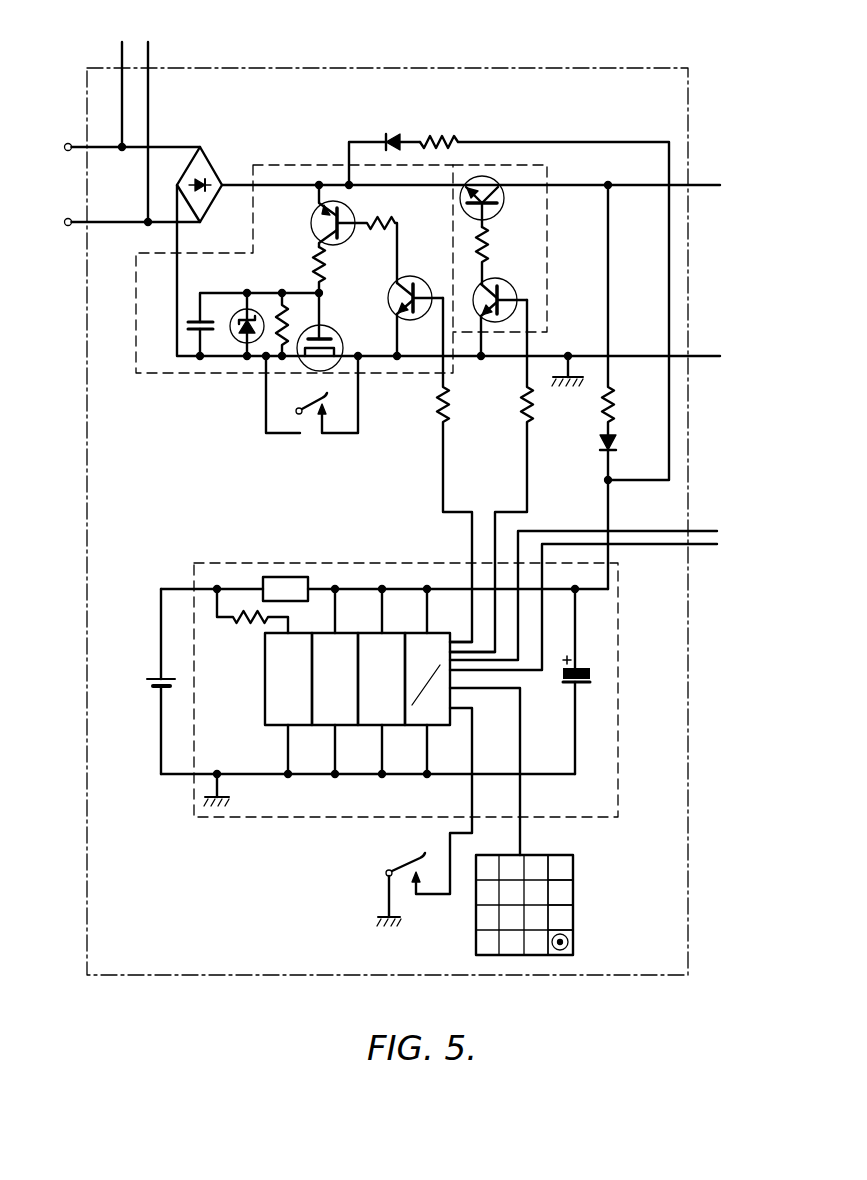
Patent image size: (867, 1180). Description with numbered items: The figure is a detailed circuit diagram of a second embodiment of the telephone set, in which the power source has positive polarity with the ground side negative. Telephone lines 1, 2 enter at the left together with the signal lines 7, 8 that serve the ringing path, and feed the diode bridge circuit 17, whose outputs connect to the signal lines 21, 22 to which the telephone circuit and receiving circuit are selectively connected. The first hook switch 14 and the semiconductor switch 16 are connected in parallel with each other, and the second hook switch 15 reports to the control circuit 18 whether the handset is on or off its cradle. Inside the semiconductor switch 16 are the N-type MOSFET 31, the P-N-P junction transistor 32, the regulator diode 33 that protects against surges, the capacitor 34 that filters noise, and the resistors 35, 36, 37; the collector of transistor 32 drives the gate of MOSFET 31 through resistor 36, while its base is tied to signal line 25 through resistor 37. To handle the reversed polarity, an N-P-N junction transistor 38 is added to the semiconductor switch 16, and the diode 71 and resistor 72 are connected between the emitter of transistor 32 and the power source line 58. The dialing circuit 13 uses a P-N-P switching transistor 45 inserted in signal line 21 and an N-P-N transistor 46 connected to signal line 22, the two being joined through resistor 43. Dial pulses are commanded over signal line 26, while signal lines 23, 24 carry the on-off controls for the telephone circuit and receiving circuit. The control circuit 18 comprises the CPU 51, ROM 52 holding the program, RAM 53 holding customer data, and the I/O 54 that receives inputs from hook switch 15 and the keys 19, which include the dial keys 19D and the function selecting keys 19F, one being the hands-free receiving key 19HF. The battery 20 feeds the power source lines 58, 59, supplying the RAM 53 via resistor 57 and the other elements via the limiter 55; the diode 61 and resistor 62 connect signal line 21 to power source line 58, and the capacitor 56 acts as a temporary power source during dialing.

The telephone line 1 is at (70, 143).
The telephone line 2 is at (70, 218).
The signal line 7 is at (122, 42).
The signal line 8 is at (148, 42).
The dialing circuit 13 is at (547, 165).
The first hook switch 14 is at (310, 425).
The second hook switch 15 is at (402, 866).
The semiconductor switch 16 is at (292, 165).
The diode bridge circuit 17 is at (210, 152).
The control circuit 18 is at (272, 820).
The keys 19 is at (462, 943).
The dial keys 19D is at (522, 960).
The function selecting keys 19F is at (573, 917).
The hands-free receiving key 19HF is at (568, 952).
The battery 20 is at (158, 690).
The signal line 21 is at (700, 185).
The signal line 22 is at (697, 355).
The signal line 23 is at (595, 590).
The signal line 24 is at (595, 603).
The signal line 25 is at (443, 462).
The signal line 26 is at (527, 462).
The N-type MOSFET 31 is at (338, 330).
The P-N-P type junction transistor 32 is at (313, 218).
The regulator diode 33 is at (253, 308).
The capacitor 34 is at (197, 303).
The resistor 35 is at (288, 308).
The resistor 36 is at (328, 268).
The resistor 37 is at (378, 220).
The N-P-N junction transistor 38 is at (418, 282).
The resistor 43 is at (487, 248).
The switching transistor 45 is at (500, 208).
The transistor 46 is at (505, 285).
The CPU 51 is at (326, 727).
The ROM 52 is at (374, 727).
The RAM 53 is at (270, 727).
The I/O 54 is at (420, 727).
The limiter 55 is at (290, 577).
The capacitor 56 is at (558, 682).
The resistor 57 is at (240, 622).
The power source line 58 is at (403, 587).
The power source line 59 is at (570, 776).
The diode 61 is at (616, 442).
The resistor 62 is at (615, 400).
The diode 71 is at (398, 135).
The resistor 72 is at (452, 135).